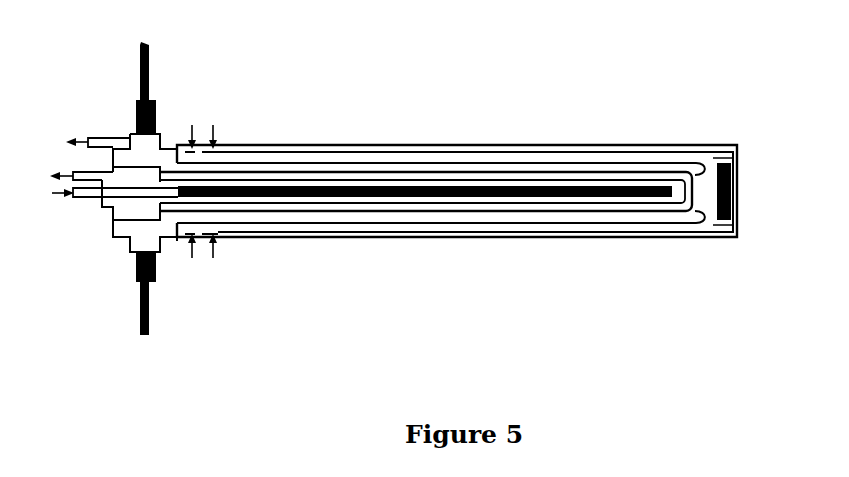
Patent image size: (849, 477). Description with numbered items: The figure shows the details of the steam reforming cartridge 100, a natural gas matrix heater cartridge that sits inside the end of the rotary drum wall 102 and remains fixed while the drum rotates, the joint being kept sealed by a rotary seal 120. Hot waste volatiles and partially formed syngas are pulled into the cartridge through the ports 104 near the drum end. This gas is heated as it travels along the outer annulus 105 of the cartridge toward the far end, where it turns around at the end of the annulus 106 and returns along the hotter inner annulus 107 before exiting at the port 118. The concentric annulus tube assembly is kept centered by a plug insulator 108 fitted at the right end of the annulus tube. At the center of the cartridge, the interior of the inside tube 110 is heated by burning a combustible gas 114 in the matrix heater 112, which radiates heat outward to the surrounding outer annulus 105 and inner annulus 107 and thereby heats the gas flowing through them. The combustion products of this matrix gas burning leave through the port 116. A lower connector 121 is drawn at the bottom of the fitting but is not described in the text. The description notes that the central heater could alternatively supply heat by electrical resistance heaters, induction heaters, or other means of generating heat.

The steam reforming cartridge 100 is at (405, 144).
The rotary drum wall 102 is at (142, 64).
The ports 104 is at (208, 205).
The outer annulus 105 is at (343, 228).
The end of the annulus 106 is at (703, 156).
The inner annulus 107 is at (484, 166).
The plug insulator 108 is at (733, 184).
The inside tube 110 is at (641, 208).
The matrix heater 112 is at (458, 198).
The combustible gas 114 is at (73, 200).
The port 116 is at (72, 166).
The port 118 is at (86, 137).
The rotary seal 120 is at (153, 110).
The lower connector 121 is at (123, 228).